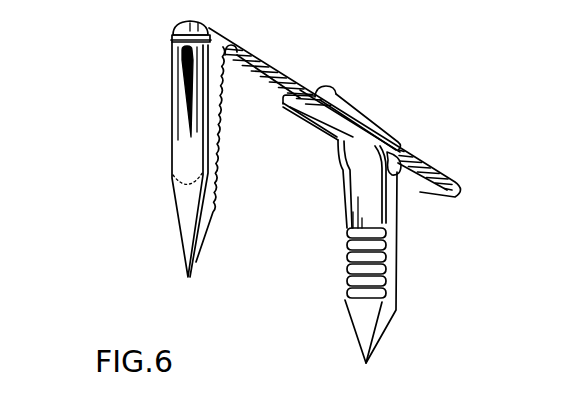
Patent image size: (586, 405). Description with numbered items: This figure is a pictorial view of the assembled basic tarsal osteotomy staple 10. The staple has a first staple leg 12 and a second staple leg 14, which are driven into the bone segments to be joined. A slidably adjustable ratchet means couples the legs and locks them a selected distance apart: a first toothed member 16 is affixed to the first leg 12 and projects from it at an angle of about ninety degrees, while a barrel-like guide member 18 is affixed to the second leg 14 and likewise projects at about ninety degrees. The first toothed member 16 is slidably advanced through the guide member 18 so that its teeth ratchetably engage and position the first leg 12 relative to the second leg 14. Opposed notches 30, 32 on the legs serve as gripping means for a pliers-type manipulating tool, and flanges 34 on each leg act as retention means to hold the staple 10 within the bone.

The tarsal osteotomy staple 10 is at (288, 157).
The first staple leg 12 is at (181, 213).
The second staple leg 14 is at (367, 347).
The first toothed member 16 is at (433, 178).
The guide member 18 is at (357, 122).
The notch 30 is at (173, 38).
The notch 32 is at (396, 172).
The flange 34 is at (180, 80).